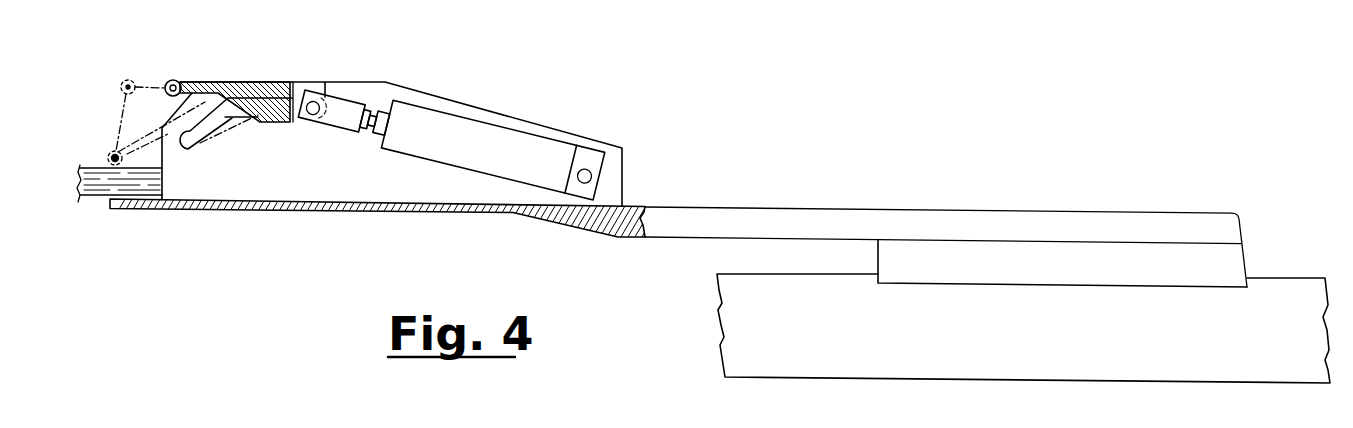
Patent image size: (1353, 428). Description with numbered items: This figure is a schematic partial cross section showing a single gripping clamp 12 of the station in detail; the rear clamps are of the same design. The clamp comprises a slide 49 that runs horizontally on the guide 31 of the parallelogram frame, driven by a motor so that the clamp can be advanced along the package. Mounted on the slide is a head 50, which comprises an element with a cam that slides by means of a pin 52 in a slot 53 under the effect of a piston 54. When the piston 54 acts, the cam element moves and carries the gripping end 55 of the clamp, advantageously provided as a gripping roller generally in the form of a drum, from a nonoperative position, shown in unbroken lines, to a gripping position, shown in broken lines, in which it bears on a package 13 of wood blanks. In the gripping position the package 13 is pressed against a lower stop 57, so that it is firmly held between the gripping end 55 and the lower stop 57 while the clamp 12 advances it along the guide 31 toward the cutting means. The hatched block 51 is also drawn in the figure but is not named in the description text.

The gripping clamp 12 is at (936, 115).
The package 13 is at (86, 170).
The guide 31 is at (860, 370).
The slide 49 is at (1223, 260).
The head 50 is at (466, 82).
The clamping block 51 is at (268, 83).
The pin 52 is at (280, 120).
The slot 53 is at (213, 116).
The piston 54 is at (533, 152).
The gripping end 55 is at (175, 80).
The lower stop 57 is at (125, 209).